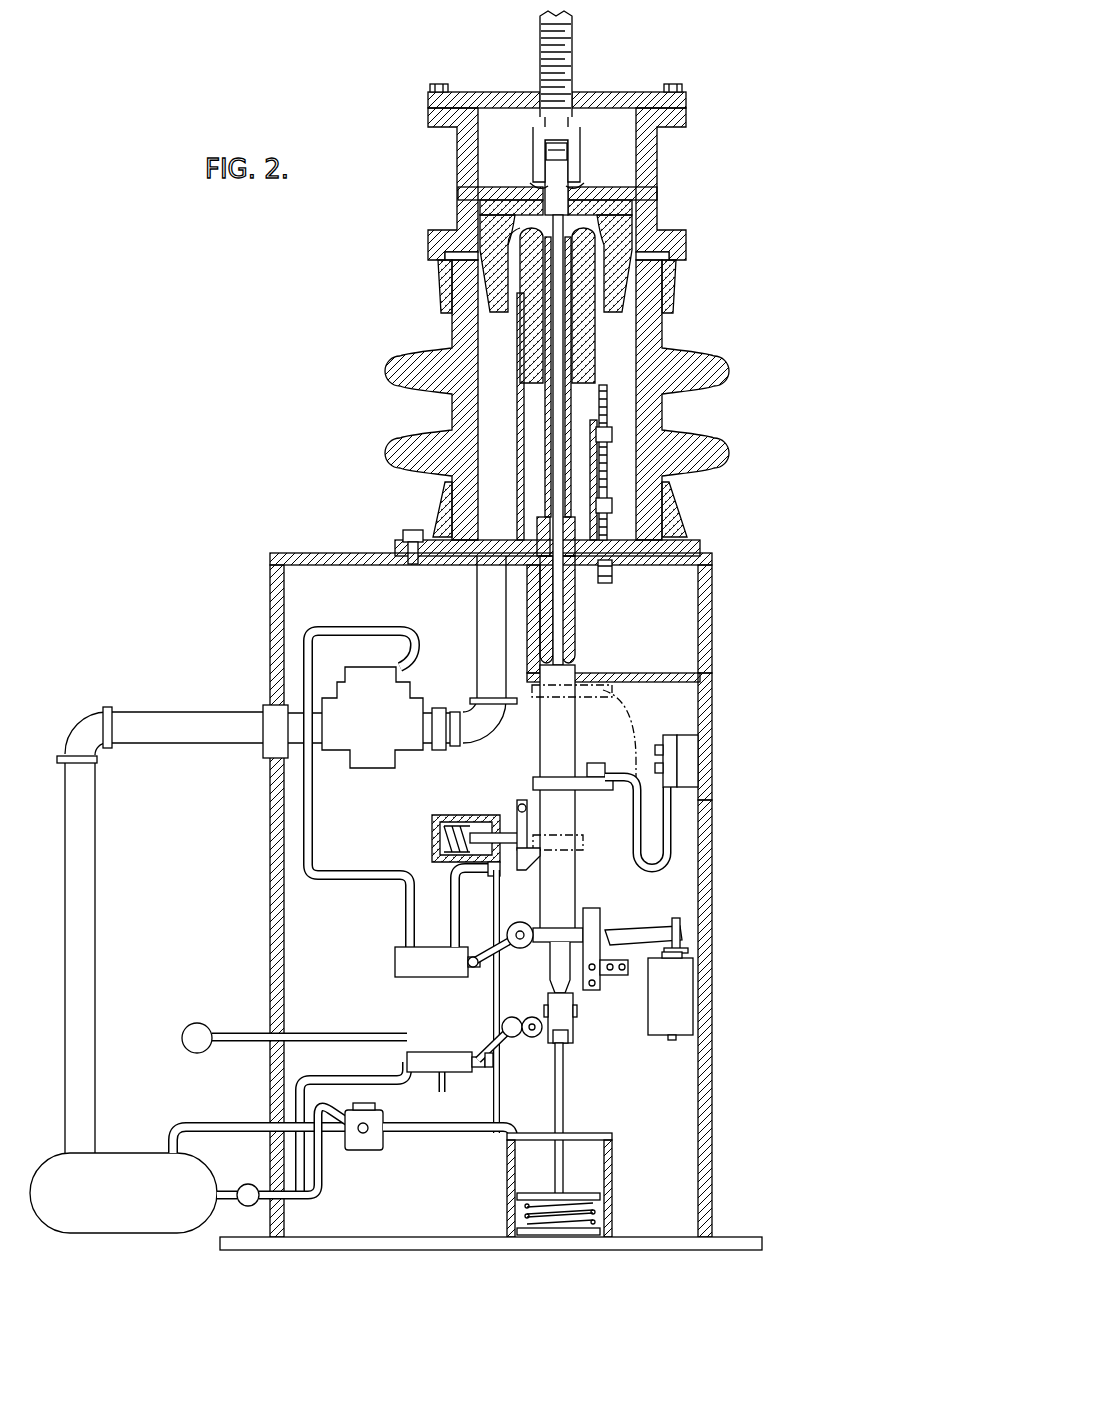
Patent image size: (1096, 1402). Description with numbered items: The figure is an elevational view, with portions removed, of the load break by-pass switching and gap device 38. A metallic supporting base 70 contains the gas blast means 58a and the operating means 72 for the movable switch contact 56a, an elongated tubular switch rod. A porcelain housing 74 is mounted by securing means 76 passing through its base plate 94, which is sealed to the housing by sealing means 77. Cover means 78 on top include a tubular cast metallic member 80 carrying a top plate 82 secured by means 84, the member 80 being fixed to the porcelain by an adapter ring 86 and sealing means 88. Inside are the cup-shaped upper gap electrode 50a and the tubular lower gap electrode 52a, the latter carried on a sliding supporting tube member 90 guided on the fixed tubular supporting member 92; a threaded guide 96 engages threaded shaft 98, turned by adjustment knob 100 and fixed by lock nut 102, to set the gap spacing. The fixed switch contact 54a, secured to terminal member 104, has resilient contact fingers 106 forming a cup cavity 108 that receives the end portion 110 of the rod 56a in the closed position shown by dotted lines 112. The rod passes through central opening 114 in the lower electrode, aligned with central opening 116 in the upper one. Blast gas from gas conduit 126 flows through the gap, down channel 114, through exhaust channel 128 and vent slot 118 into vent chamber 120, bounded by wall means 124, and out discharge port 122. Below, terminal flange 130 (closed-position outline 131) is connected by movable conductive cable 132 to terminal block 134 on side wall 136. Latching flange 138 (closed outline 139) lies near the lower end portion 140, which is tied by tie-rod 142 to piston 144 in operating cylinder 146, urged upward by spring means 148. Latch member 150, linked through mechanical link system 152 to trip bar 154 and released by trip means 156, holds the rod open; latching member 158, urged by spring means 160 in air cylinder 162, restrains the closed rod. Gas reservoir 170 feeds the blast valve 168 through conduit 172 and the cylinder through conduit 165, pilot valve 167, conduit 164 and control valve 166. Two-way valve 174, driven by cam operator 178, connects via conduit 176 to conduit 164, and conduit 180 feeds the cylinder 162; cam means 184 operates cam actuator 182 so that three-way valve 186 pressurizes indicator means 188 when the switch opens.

The load break by-pass switching and gap device 38 is at (532, 400).
The upper gap electrode 50a is at (622, 211).
The lower gap electrode 52a is at (583, 372).
The fixed switch contact 54a is at (580, 142).
The movable switch contact 56a is at (578, 630).
The gas blast means 58a is at (380, 607).
The supporting base 70 is at (354, 553).
The operating means 72 is at (622, 836).
The housing 74 is at (662, 352).
The securing means 76 is at (412, 530).
The sealing means 77 is at (440, 492).
The cover means 78 is at (688, 120).
The tubular cast metallic member 80 is at (657, 158).
The top plate 82 is at (641, 92).
The securing means 84 is at (674, 86).
The adapter ring 86 is at (686, 268).
The sealing means 88 is at (442, 291).
The sliding supporting tube member 90 is at (596, 380).
The fixed tubular supporting member 92 is at (517, 430).
The base plate 94 is at (524, 540).
The threaded guide 96 is at (612, 434).
The threaded shaft 98 is at (610, 498).
The adjustment knob 100 is at (612, 578).
The lock nut 102 is at (600, 530).
The terminal member 104 is at (573, 57).
The resilient contact fingers 106 is at (580, 165).
The cup cavity 108 is at (546, 151).
The end portion 110 is at (548, 243).
The dotted lines 112 is at (540, 187).
The central opening 114 is at (572, 330).
The central opening 116 is at (578, 185).
The vent slot 118 is at (563, 607).
The vent chamber 120 is at (680, 620).
The discharge port 122 is at (712, 600).
The wall means 124 is at (631, 673).
The gas conduit 126 is at (478, 595).
The exhaust channel 128 is at (556, 355).
The terminal flange 130 is at (562, 762).
The dotted connector flange outline 131 is at (583, 700).
The movable conductive cable 132 is at (622, 792).
The terminal block 134 is at (698, 733).
The side wall 136 is at (712, 693).
The latching flange 138 is at (560, 928).
The dotted latching flange outline 139 is at (583, 843).
The lower end portion 140 is at (550, 958).
The tie-rod 142 is at (563, 1063).
The piston 144 is at (565, 1193).
The operating cylinder 146 is at (612, 1152).
The spring means 148 is at (593, 1210).
The latch member 150 is at (590, 912).
The mechanical link system 152 is at (648, 930).
The trip bar 154 is at (690, 935).
The trip means 156 is at (693, 979).
The latching member 158 is at (519, 803).
The spring means 160 is at (432, 828).
The air cylinder 162 is at (442, 822).
The conduit 164 is at (460, 1122).
The conduit 165 is at (220, 1122).
The control valve 166 is at (250, 1184).
The pilot valve 167 is at (380, 1110).
The solenoid and pressure controlled valve 168 is at (405, 690).
The gas reservoir 170 is at (128, 1153).
The conduit 172 is at (216, 712).
The two-way valve 174 is at (395, 950).
The conduit 176 is at (493, 997).
The cam operator 178 is at (520, 922).
The conduit 180 is at (488, 868).
The cam actuator 182 is at (518, 1017).
The cam means 184 is at (531, 1037).
The three-way valve 186 is at (446, 1052).
The indicator means 188 is at (202, 1023).